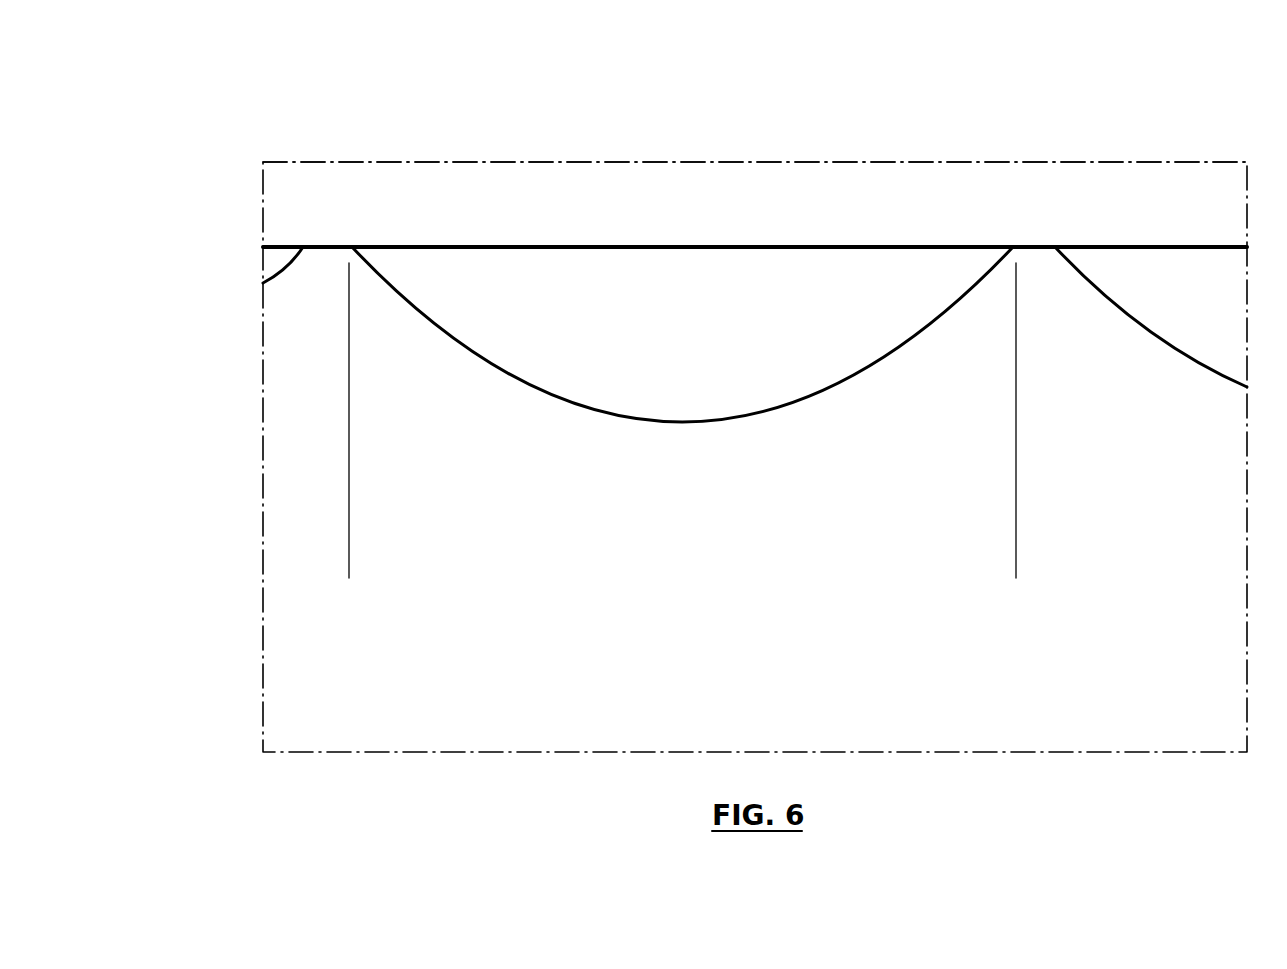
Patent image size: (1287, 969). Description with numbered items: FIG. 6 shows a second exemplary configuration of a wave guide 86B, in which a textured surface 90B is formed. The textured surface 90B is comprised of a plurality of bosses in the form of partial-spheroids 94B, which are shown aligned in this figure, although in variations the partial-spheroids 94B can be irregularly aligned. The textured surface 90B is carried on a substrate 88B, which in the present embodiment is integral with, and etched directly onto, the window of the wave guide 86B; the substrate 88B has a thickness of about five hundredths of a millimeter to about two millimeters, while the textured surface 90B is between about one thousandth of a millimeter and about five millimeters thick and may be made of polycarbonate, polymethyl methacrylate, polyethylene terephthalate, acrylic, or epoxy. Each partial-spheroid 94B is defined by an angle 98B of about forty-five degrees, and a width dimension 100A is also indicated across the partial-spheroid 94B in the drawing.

The wave guide 86B is at (272, 138).
The substrate 88B is at (288, 208).
The textured surface 90B is at (368, 333).
The partial-spheroid 94B is at (622, 285).
The angle 98B is at (905, 415).
The recess width 100A is at (1013, 562).